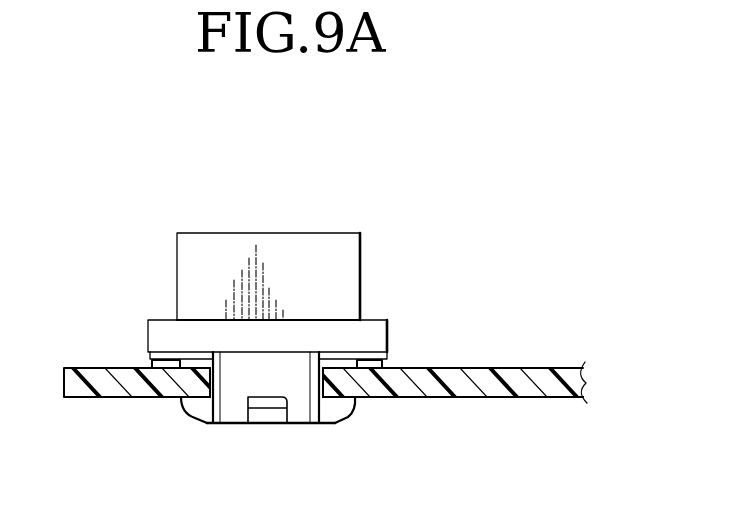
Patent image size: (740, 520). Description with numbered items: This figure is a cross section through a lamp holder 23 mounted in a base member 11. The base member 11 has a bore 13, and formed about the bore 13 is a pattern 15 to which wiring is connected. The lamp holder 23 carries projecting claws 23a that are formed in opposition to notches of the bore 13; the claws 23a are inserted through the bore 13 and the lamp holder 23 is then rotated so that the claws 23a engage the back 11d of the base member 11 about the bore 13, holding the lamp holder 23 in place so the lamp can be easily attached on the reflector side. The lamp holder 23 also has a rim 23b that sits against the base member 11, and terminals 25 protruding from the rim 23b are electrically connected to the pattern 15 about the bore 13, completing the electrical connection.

The base member 11 is at (505, 367).
The back of the base member 11d is at (541, 393).
The bore 13 is at (311, 355).
The pattern 15 is at (138, 398).
The lamp holder 23 is at (360, 265).
The projecting claw 23a is at (200, 408).
The rim 23b is at (377, 330).
The terminal 25 is at (150, 357).